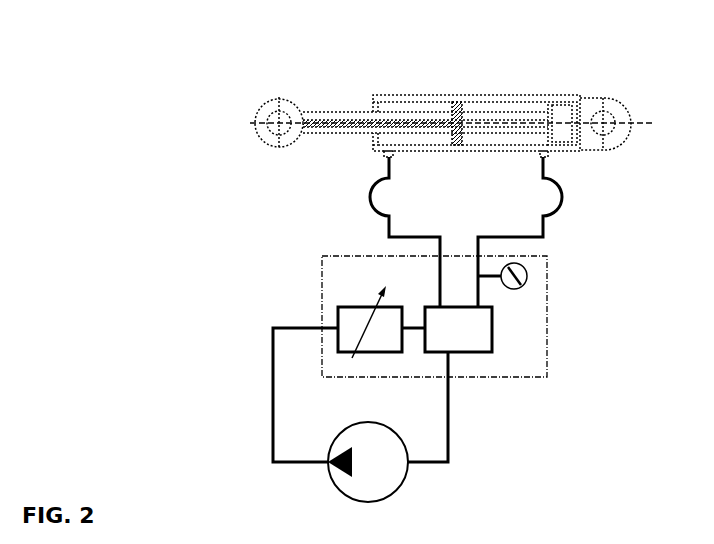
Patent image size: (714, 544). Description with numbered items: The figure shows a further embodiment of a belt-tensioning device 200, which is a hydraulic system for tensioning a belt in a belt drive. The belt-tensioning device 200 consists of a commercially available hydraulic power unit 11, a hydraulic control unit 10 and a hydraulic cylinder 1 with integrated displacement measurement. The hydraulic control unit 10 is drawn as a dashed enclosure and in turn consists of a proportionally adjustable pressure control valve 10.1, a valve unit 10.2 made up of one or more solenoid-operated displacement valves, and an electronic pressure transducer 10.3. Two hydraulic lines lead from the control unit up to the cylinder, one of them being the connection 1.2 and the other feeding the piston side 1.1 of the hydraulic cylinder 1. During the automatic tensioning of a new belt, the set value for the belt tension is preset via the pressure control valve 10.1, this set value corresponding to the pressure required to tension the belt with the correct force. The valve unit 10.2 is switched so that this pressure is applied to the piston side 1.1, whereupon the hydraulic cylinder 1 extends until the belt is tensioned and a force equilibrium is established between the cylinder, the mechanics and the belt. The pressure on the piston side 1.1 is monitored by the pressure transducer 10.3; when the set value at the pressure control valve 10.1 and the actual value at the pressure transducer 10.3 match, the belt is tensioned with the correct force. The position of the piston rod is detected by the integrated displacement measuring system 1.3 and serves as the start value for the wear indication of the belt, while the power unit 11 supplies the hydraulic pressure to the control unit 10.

The belt-tensioning device 200 is at (138, 79).
The hydraulic cylinder 1 is at (500, 95).
The piston side of the hydraulic cylinder 1.1 is at (547, 172).
The second hydraulic line 1.2 is at (388, 175).
The integrated displacement measuring system 1.3 is at (550, 96).
The hydraulic control unit 10 is at (547, 345).
The proportionally adjustable pressure control valve 10.1 is at (355, 305).
The valve unit 10.2 is at (475, 353).
The electronic pressure transducer 10.3 is at (527, 268).
The hydraulic power unit 11 is at (403, 490).